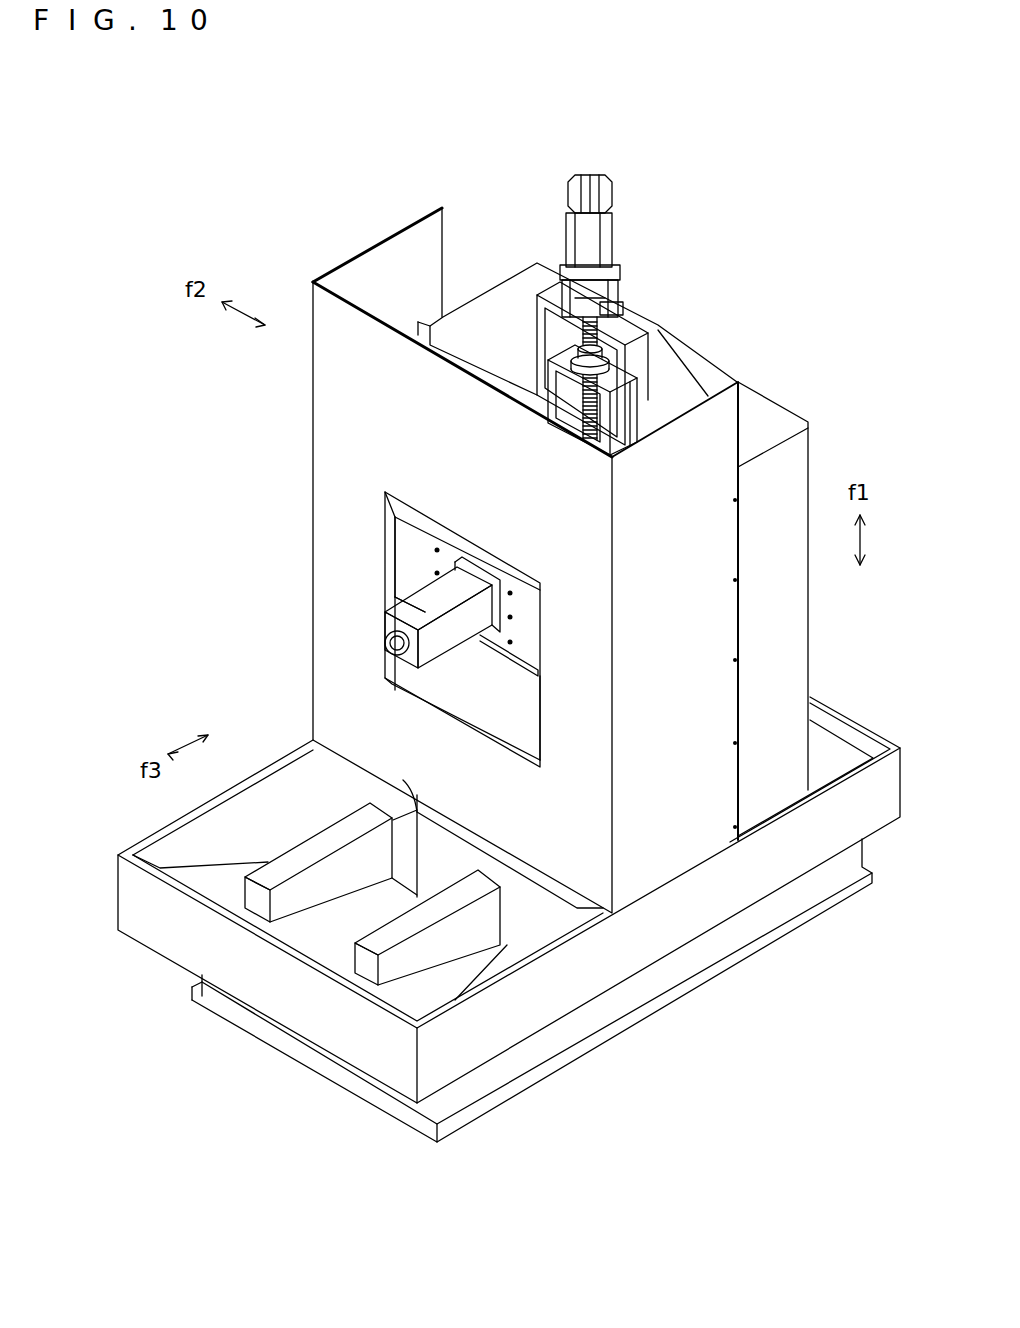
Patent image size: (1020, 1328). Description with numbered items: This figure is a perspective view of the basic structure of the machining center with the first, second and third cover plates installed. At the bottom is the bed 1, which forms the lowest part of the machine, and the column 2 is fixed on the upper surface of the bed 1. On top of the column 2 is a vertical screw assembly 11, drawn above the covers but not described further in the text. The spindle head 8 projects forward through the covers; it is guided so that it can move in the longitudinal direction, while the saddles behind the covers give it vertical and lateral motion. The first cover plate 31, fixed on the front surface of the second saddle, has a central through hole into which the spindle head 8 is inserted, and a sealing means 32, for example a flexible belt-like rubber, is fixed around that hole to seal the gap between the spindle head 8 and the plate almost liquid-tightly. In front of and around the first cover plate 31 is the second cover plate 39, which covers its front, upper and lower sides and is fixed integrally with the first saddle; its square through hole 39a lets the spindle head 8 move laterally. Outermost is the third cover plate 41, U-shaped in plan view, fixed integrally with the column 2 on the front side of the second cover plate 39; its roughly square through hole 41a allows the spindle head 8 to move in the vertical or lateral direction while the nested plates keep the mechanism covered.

The bed 1 is at (580, 1015).
The column 2 is at (772, 418).
The spindle head 8 is at (450, 640).
The adjusting screw 11 is at (608, 225).
The first cover plate 31 is at (524, 606).
The sealing means 32 is at (462, 572).
The second cover plate 39 is at (525, 690).
The square through hole 39a is at (405, 553).
The third cover plate 41 is at (322, 413).
The roughly square through hole 41a is at (480, 716).